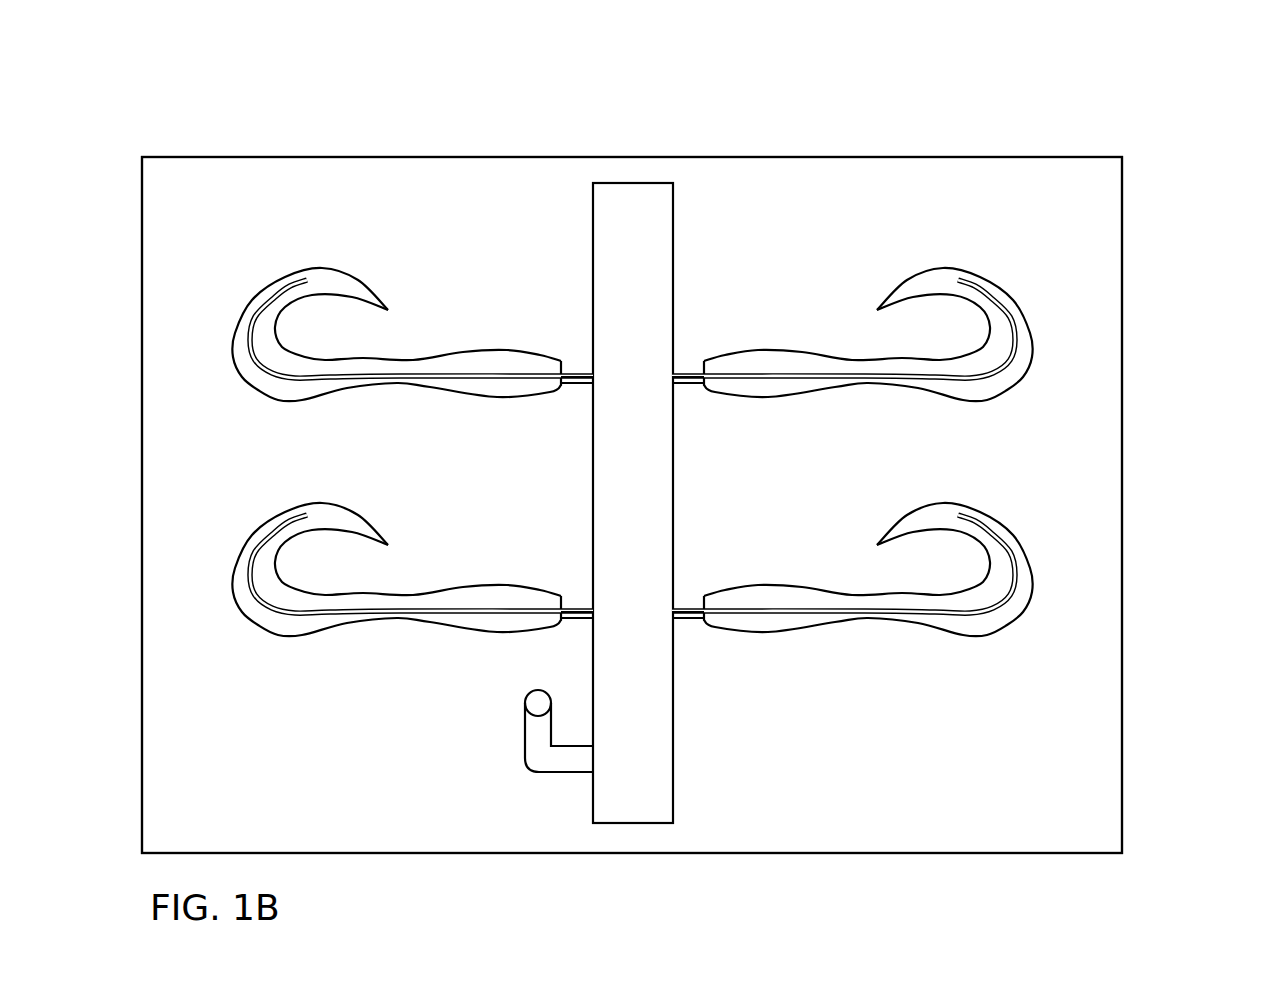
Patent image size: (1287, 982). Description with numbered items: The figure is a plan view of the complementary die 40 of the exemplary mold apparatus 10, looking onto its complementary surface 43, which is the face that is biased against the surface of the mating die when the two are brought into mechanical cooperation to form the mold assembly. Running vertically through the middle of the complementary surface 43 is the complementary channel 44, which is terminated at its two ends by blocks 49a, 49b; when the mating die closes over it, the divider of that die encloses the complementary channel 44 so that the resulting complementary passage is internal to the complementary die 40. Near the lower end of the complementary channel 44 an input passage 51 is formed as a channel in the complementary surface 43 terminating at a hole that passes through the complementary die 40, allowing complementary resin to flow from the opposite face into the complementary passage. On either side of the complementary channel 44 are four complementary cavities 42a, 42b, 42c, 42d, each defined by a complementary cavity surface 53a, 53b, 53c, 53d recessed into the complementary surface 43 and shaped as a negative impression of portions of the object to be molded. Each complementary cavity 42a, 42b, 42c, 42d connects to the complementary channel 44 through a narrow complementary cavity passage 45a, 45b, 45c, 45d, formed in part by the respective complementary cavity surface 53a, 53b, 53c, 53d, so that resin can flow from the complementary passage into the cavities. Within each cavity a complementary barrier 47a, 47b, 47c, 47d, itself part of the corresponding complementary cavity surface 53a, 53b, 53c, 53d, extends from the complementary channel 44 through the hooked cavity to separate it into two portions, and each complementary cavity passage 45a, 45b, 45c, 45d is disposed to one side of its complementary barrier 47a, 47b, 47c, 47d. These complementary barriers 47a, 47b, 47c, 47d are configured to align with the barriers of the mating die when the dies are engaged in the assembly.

The mold apparatus 10 is at (1170, 98).
The complementary die 40 is at (1100, 748).
The complementary surface 43 is at (1002, 833).
The complementary channel 44 is at (655, 729).
The block 49a is at (633, 833).
The block 49b is at (629, 170).
The input passage 51 is at (531, 740).
The complementary cavity 42a is at (879, 356).
The complementary cavity 42b is at (879, 591).
The complementary cavity 42c is at (389, 356).
The complementary cavity 42d is at (389, 591).
The complementary passage 45a is at (703, 331).
The complementary cavity passage 45b is at (704, 566).
The complementary cavity passage 45c is at (577, 372).
The complementary cavity passage 45d is at (562, 566).
The complementary barrier 47a is at (879, 345).
The complementary barrier 47b is at (879, 580).
The complementary barrier 47c is at (267, 372).
The complementary barrier 47d is at (389, 580).
The complementary cavity surface 53a is at (877, 356).
The complementary cavity surface 53b is at (878, 591).
The complementary cavity surface 53c is at (303, 392).
The complementary cavity surface 53d is at (389, 591).